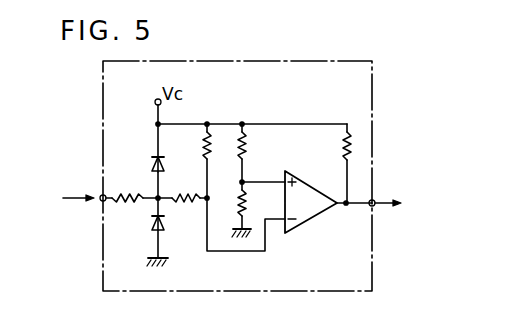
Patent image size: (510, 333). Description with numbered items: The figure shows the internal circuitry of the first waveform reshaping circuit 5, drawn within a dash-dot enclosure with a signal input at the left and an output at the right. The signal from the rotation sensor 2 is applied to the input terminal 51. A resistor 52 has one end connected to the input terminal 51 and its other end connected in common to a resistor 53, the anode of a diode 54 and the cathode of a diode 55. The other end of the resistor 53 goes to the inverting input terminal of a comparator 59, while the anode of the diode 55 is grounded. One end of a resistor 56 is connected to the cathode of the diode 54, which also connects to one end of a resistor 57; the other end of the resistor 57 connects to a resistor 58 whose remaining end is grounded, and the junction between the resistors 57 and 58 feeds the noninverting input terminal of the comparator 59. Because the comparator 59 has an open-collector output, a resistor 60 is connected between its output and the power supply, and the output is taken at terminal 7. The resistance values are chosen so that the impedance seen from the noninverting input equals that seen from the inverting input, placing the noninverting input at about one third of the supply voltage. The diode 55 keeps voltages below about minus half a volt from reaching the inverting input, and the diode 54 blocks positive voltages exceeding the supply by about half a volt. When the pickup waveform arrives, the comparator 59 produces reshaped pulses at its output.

The rotation sensor 2 is at (68, 204).
The first waveform reshaping circuit 5 is at (374, 212).
The output terminal 7 is at (393, 204).
The input terminal 51 is at (101, 203).
The resistor 52 is at (127, 203).
The resistor 53 is at (185, 192).
The diode 54 is at (153, 161).
The diode 55 is at (166, 222).
The resistor 56 is at (212, 150).
The resistor 57 is at (246, 147).
The resistor 58 is at (238, 206).
The comparator 59 is at (304, 223).
The resistor 60 is at (340, 150).